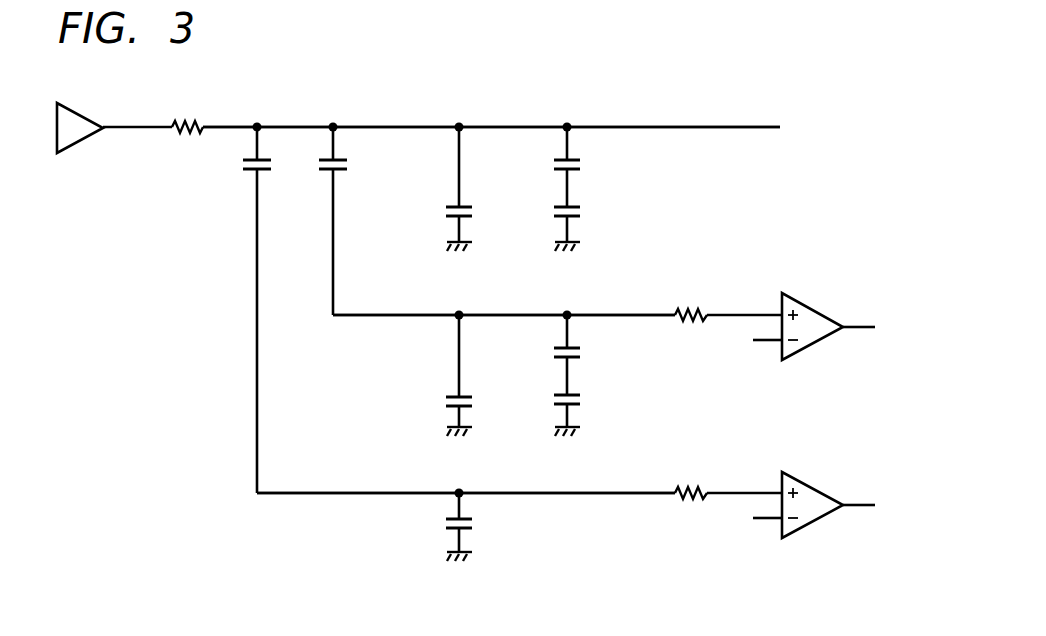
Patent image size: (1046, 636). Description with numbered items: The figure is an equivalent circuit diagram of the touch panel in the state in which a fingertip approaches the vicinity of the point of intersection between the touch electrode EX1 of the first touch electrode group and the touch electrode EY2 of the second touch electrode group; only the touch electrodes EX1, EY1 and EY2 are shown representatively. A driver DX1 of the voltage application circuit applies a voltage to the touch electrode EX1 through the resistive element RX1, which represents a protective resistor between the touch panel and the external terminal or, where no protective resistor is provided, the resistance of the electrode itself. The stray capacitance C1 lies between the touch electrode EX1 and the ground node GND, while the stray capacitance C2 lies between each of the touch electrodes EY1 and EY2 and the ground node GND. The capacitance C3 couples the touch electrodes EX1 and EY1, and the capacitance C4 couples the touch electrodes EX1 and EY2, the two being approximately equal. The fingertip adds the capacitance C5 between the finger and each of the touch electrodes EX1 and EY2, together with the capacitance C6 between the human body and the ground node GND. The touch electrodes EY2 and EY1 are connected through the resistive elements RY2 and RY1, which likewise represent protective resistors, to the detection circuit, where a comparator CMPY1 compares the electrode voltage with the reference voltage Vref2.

The driver DX1 is at (77, 106).
The resistive element RX1 is at (182, 119).
The touch electrode EX1 is at (385, 125).
The capacitance C3 is at (242, 165).
The capacitance C4 is at (349, 152).
The stray capacitance C1 is at (443, 189).
The capacitance C5 is at (584, 261).
The capacitance C6 is at (584, 318).
The touch electrode EY2 is at (351, 318).
The stray capacitance C2 is at (443, 433).
The resistive element RY2 is at (686, 307).
The reference voltage Vref2 is at (742, 428).
The comparator CMPY1 is at (808, 352).
The touch electrode EY1 is at (304, 496).
The resistive element RY1 is at (686, 485).
The ground node GND is at (460, 569).